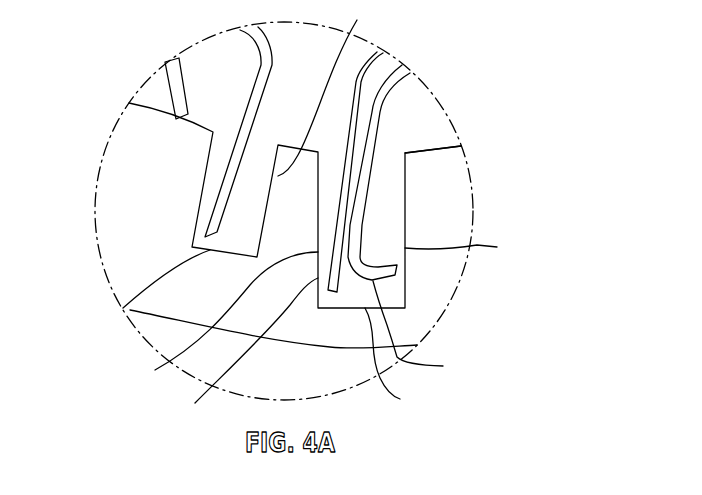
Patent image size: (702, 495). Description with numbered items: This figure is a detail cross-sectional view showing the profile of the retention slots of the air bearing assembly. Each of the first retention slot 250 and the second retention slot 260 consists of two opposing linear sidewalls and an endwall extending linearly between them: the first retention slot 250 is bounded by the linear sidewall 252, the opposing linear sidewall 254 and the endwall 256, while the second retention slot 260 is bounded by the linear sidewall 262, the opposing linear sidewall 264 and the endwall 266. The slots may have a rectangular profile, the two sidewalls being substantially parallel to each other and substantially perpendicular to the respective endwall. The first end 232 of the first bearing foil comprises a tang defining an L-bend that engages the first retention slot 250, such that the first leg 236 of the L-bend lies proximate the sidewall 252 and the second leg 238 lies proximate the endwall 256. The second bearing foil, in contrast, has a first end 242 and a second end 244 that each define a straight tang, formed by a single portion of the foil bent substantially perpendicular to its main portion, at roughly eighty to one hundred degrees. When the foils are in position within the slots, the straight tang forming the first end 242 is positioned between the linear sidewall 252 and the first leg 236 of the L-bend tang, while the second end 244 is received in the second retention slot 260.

The first end 232 is at (386, 291).
The first leg 236 is at (375, 144).
The second leg 238 is at (426, 329).
The first end 242 is at (235, 348).
The second end 244 is at (206, 182).
The first retention slot 250 is at (421, 199).
The linear sidewall 252 is at (155, 370).
The linear sidewall 254 is at (471, 247).
The endwall 256 is at (404, 360).
The second retention slot 260 is at (168, 217).
The linear sidewall 262 is at (210, 157).
The linear sidewall 264 is at (357, 20).
The endwall 266 is at (130, 310).